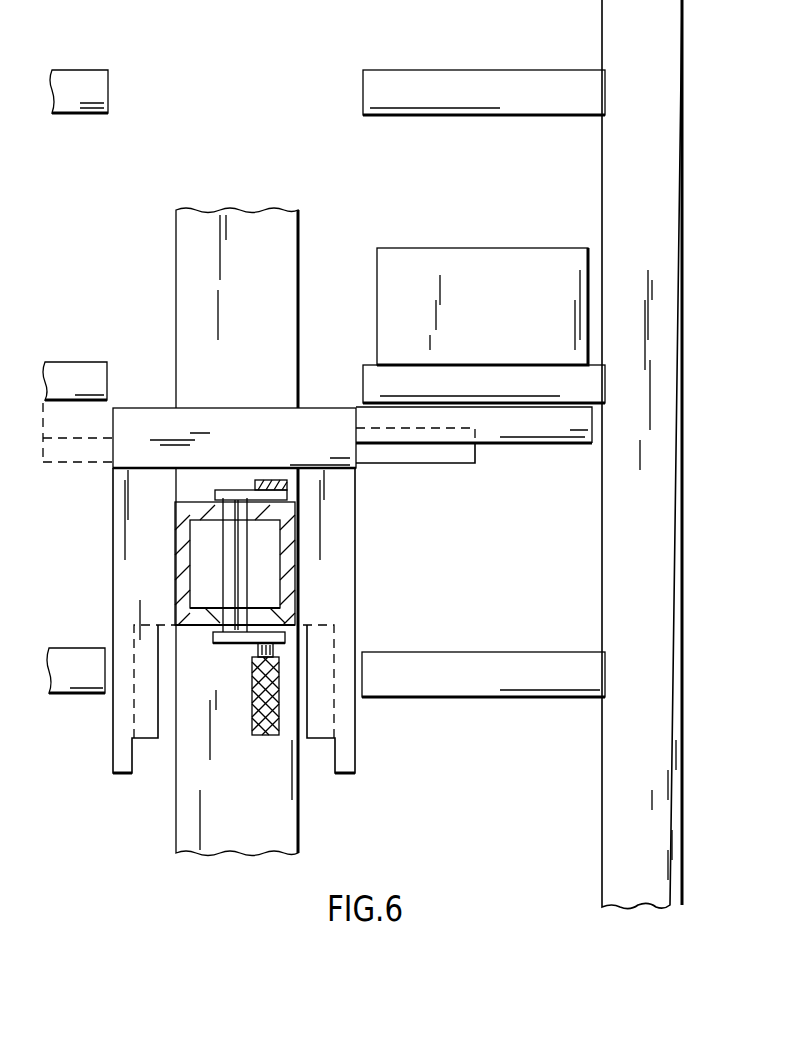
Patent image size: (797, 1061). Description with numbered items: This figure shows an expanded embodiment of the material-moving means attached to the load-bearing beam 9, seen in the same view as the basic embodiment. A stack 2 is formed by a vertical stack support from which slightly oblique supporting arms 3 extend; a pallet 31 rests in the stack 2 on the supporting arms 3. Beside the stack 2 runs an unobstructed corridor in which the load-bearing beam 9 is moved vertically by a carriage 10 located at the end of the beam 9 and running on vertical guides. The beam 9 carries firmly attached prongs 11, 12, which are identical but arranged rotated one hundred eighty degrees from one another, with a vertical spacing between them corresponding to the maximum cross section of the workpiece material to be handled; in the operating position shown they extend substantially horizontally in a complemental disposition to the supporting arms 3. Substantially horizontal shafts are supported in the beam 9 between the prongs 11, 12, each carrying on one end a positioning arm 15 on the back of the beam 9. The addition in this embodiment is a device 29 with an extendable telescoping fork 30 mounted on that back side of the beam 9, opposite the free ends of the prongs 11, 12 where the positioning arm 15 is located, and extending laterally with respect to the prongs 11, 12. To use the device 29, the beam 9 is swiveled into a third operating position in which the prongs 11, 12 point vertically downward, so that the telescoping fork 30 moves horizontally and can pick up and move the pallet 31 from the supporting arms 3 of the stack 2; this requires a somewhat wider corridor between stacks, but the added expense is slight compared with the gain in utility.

The stack 2 is at (605, 22).
The supporting arm 3 is at (87, 97).
The load-bearing beam 9 is at (285, 575).
The carriage 10 is at (248, 222).
The prong 11 is at (122, 717).
The prong 12 is at (340, 750).
The positioning arm 15 is at (222, 490).
The device 29 is at (323, 428).
The telescoping fork 30 is at (546, 430).
The pallet 31 is at (488, 268).